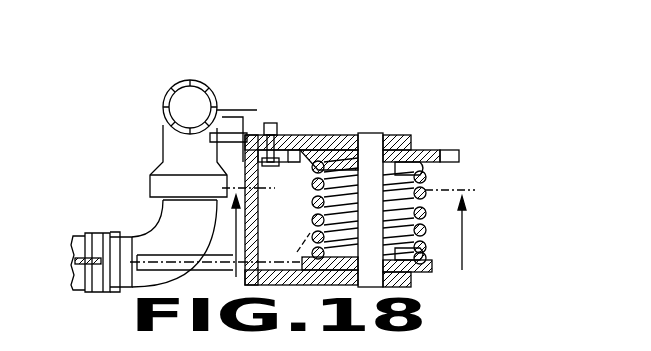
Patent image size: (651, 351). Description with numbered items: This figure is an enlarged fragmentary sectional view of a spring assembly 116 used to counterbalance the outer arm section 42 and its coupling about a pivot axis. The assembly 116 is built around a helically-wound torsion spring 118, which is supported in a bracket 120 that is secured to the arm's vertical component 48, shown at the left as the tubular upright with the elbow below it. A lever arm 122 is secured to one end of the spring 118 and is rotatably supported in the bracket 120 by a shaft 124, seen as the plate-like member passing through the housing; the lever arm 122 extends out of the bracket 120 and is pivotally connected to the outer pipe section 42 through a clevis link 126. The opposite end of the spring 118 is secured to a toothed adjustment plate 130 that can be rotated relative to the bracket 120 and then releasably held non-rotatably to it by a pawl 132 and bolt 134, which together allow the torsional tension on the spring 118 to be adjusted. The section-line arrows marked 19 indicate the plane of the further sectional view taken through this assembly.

The outer arm section 42 is at (72, 250).
The vertical component 48 is at (178, 85).
The spring assembly 116 is at (343, 125).
The helically-wound torsion spring 118 is at (315, 190).
The bracket 120 is at (408, 140).
The lever arm 122 is at (306, 233).
The shaft 124 is at (372, 137).
The clevis link 126 is at (165, 222).
The toothed adjustment plate 130 is at (440, 152).
The pawl 132 is at (290, 150).
The bolt 134 is at (272, 124).
The section line 19- 19 is at (340, 247).